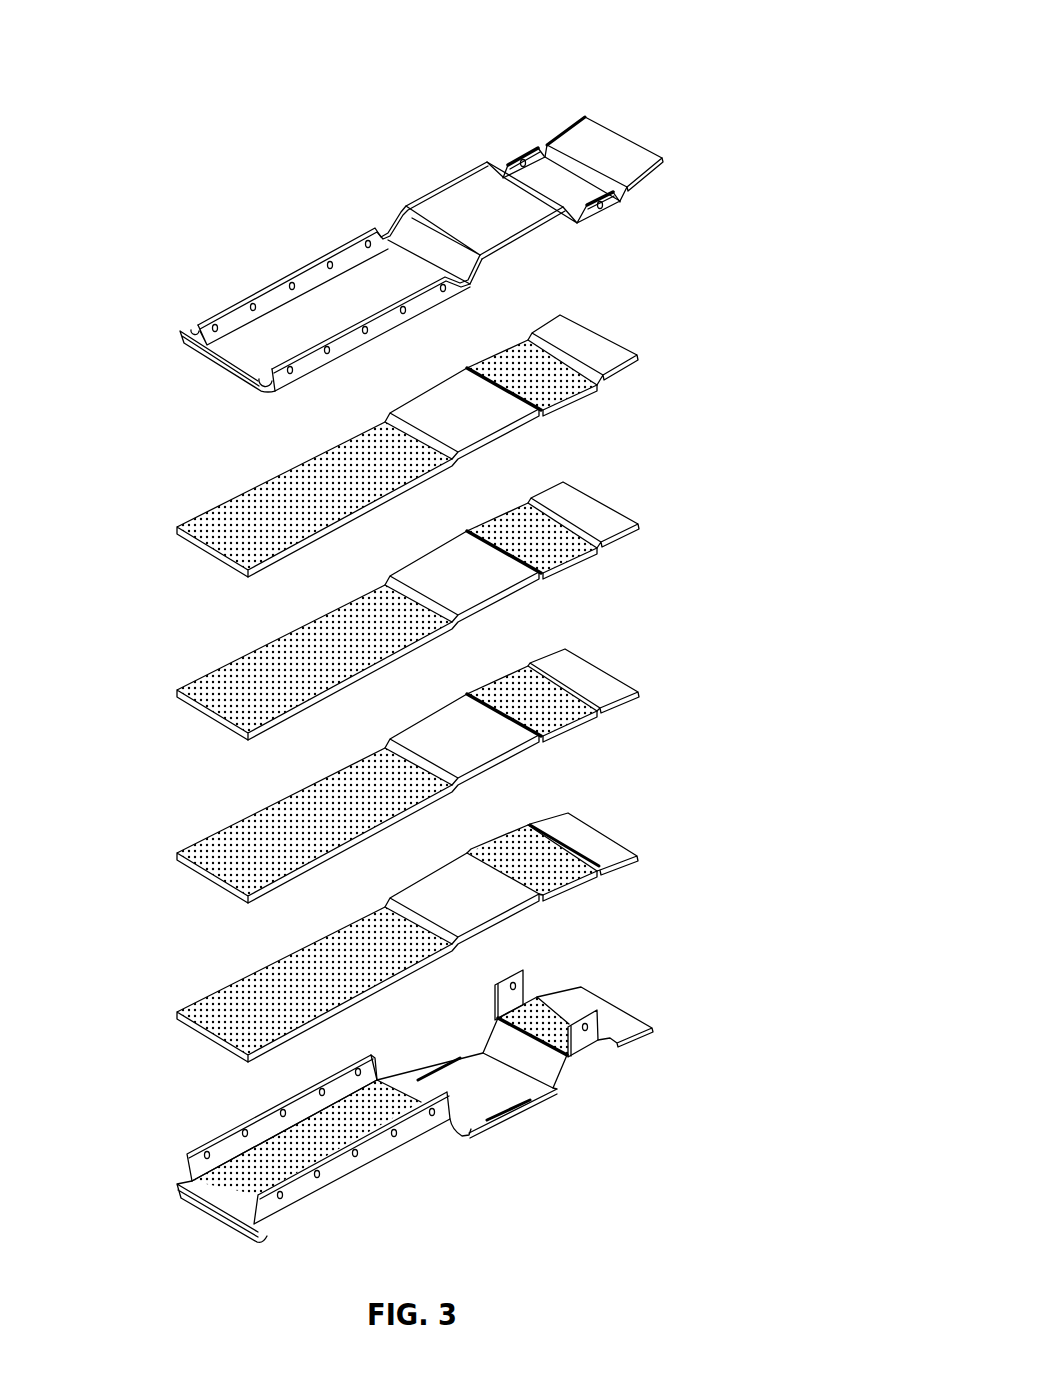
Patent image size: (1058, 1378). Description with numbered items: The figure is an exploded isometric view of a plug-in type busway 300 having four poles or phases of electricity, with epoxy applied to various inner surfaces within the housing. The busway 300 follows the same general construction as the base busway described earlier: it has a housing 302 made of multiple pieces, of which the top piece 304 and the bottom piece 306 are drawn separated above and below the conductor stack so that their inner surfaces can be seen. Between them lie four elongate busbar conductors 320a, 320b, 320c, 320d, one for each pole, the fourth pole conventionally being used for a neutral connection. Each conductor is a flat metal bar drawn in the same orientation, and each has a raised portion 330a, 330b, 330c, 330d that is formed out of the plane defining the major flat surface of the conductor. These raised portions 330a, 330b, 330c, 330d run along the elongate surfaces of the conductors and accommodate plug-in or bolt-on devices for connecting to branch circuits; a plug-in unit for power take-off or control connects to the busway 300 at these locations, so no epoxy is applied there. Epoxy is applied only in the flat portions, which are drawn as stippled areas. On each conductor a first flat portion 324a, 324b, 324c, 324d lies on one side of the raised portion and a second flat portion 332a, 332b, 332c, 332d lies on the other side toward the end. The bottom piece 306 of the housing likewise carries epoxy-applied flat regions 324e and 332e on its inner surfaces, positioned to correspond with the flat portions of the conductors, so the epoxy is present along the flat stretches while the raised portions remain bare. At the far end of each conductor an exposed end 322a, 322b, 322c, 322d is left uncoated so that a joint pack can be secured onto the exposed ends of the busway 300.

The busway 300 is at (682, 60).
The housing 302 is at (657, 143).
The top piece 304 is at (317, 258).
The bottom piece 306 is at (640, 1000).
The first busbar conductor 320a is at (620, 337).
The second busbar conductor 320b is at (420, 579).
The third busbar conductor 320c is at (420, 744).
The fourth busbar conductor 320d is at (420, 903).
The exposed end 322a is at (571, 326).
The exposed end 322b is at (619, 483).
The exposed end 322c is at (619, 649).
The exposed end 322d is at (619, 809).
The flat portion 324a is at (203, 524).
The flat portion 324b is at (279, 662).
The flat portion 324c is at (279, 825).
The flat portion 324d is at (279, 984).
The flat portion 324e is at (222, 1188).
The raised portion 330a is at (448, 410).
The raised portion 330b is at (444, 575).
The raised portion 330c is at (444, 739).
The raised portion 330d is at (444, 898).
The flat portion 332a is at (574, 386).
The flat portion 332b is at (600, 539).
The flat portion 332c is at (600, 702).
The flat portion 332d is at (593, 861).
The flat portion 332e is at (540, 1002).